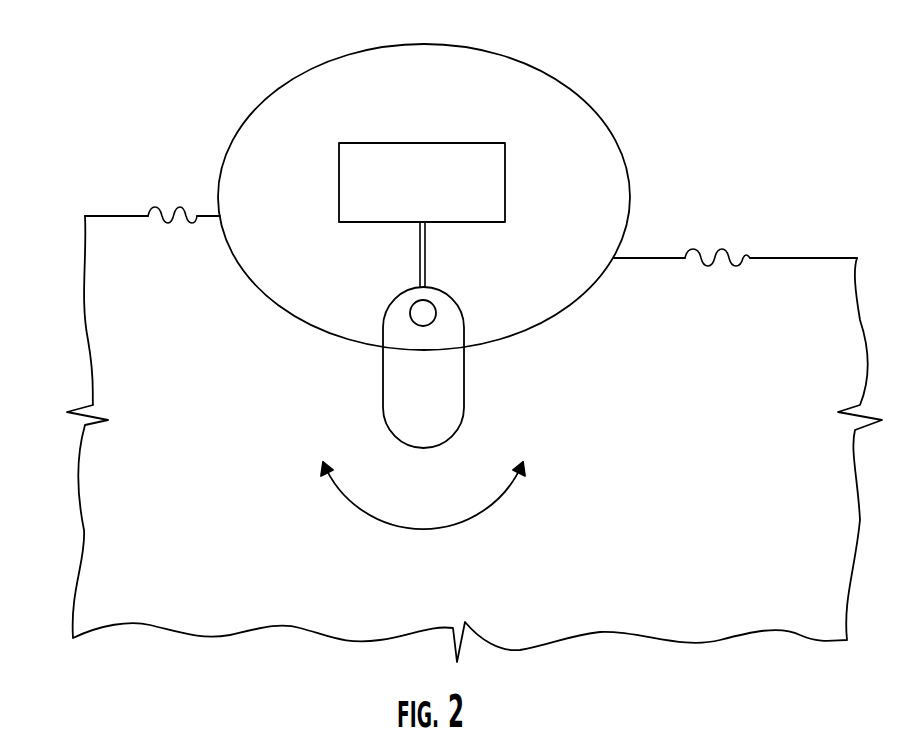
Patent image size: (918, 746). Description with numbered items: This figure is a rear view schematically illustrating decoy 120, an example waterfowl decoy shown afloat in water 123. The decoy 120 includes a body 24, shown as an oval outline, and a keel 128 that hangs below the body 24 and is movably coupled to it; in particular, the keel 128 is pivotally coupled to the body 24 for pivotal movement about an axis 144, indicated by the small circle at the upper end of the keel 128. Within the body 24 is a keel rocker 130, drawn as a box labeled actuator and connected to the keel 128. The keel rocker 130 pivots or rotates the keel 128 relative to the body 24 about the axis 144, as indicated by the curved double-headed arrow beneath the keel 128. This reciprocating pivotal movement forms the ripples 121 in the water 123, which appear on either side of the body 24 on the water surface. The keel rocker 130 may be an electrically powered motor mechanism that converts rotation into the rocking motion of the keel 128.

The decoy 120 is at (82, 214).
The water 123 is at (115, 215).
The ripples 121 is at (172, 211).
The body 24 is at (630, 196).
The keel rocker 130 is at (430, 143).
The keel 128 is at (464, 380).
The axis 144 is at (423, 313).